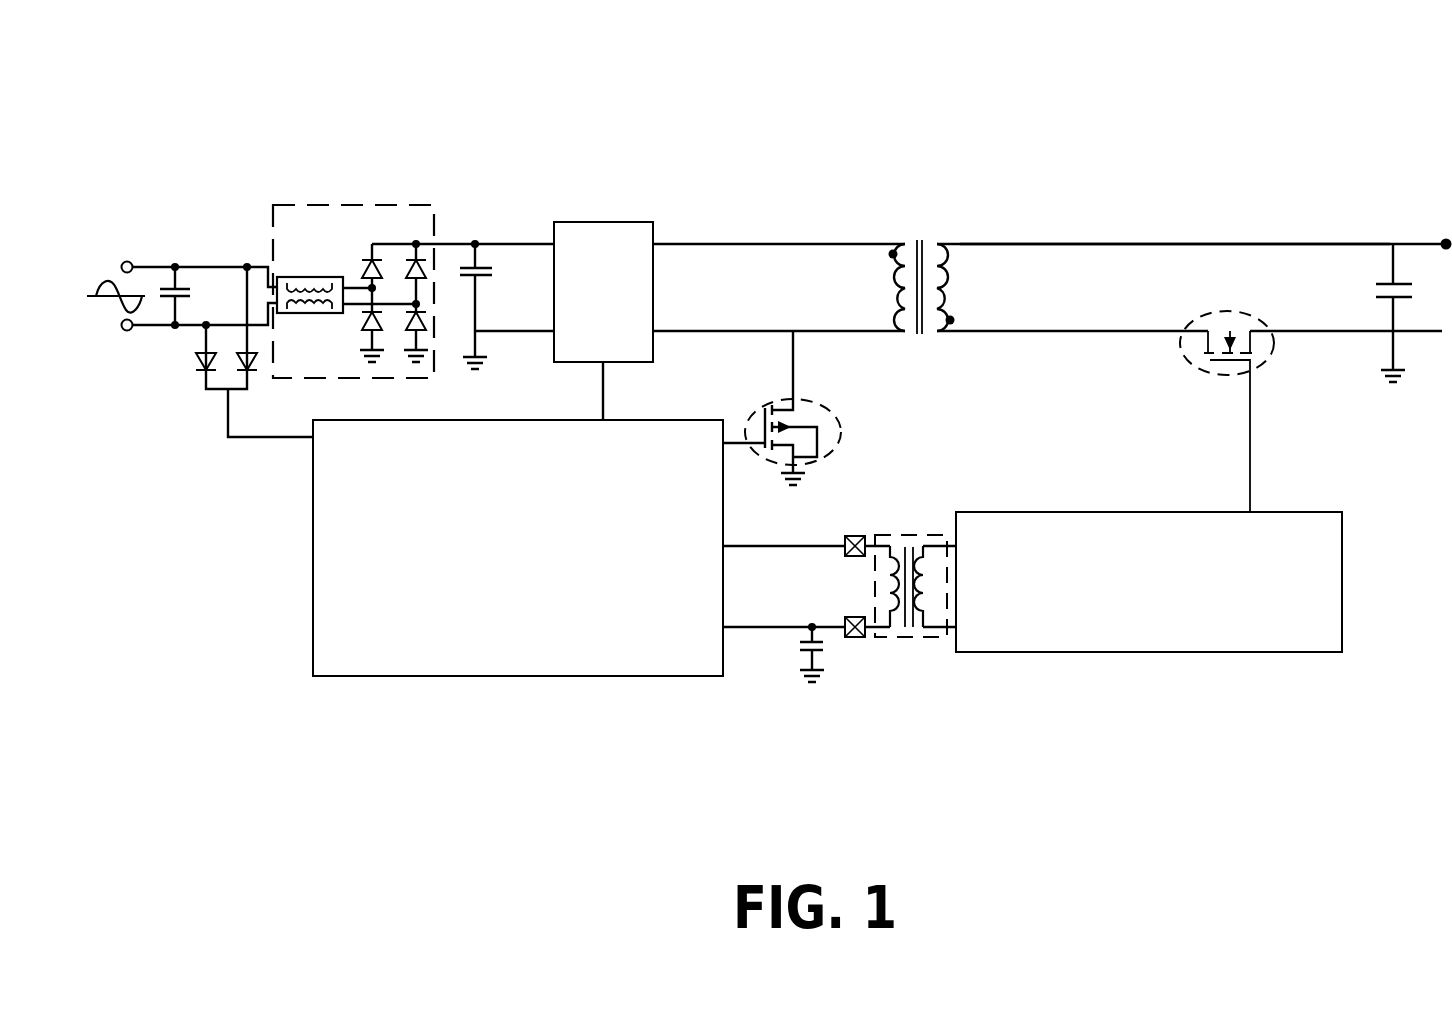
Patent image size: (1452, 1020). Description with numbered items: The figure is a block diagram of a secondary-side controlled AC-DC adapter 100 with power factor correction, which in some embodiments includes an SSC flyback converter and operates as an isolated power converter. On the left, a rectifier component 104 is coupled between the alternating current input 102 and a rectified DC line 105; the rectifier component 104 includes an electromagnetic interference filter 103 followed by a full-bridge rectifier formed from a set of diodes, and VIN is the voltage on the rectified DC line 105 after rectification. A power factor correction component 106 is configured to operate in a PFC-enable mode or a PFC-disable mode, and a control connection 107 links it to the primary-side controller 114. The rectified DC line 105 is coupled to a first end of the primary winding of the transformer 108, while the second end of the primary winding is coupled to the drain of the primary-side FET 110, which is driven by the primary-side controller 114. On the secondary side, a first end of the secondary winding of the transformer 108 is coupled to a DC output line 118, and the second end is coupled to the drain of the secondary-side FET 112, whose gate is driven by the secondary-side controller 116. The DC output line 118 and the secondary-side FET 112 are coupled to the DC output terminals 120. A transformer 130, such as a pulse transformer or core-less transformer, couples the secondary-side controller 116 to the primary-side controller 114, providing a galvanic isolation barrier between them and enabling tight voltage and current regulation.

The secondary-side controlled AC-DC adapter 100 is at (161, 63).
The alternating current input 102 is at (180, 305).
The electromagnetic interference filter 103 is at (303, 277).
The rectifier component 104 is at (340, 205).
The rectified DC line 105 is at (493, 244).
The power factor correction component 106 is at (603, 292).
The control signal line 107 is at (604, 409).
The transformer 108 is at (890, 343).
The primary-side FET 110 is at (806, 397).
The secondary-side FET 112 is at (1190, 358).
The primary-side controller 114 is at (518, 548).
The secondary-side controller 116 is at (1149, 582).
The DC output line 118 is at (1080, 244).
The DC output terminals 120 is at (1444, 236).
The transformer 130 is at (890, 535).